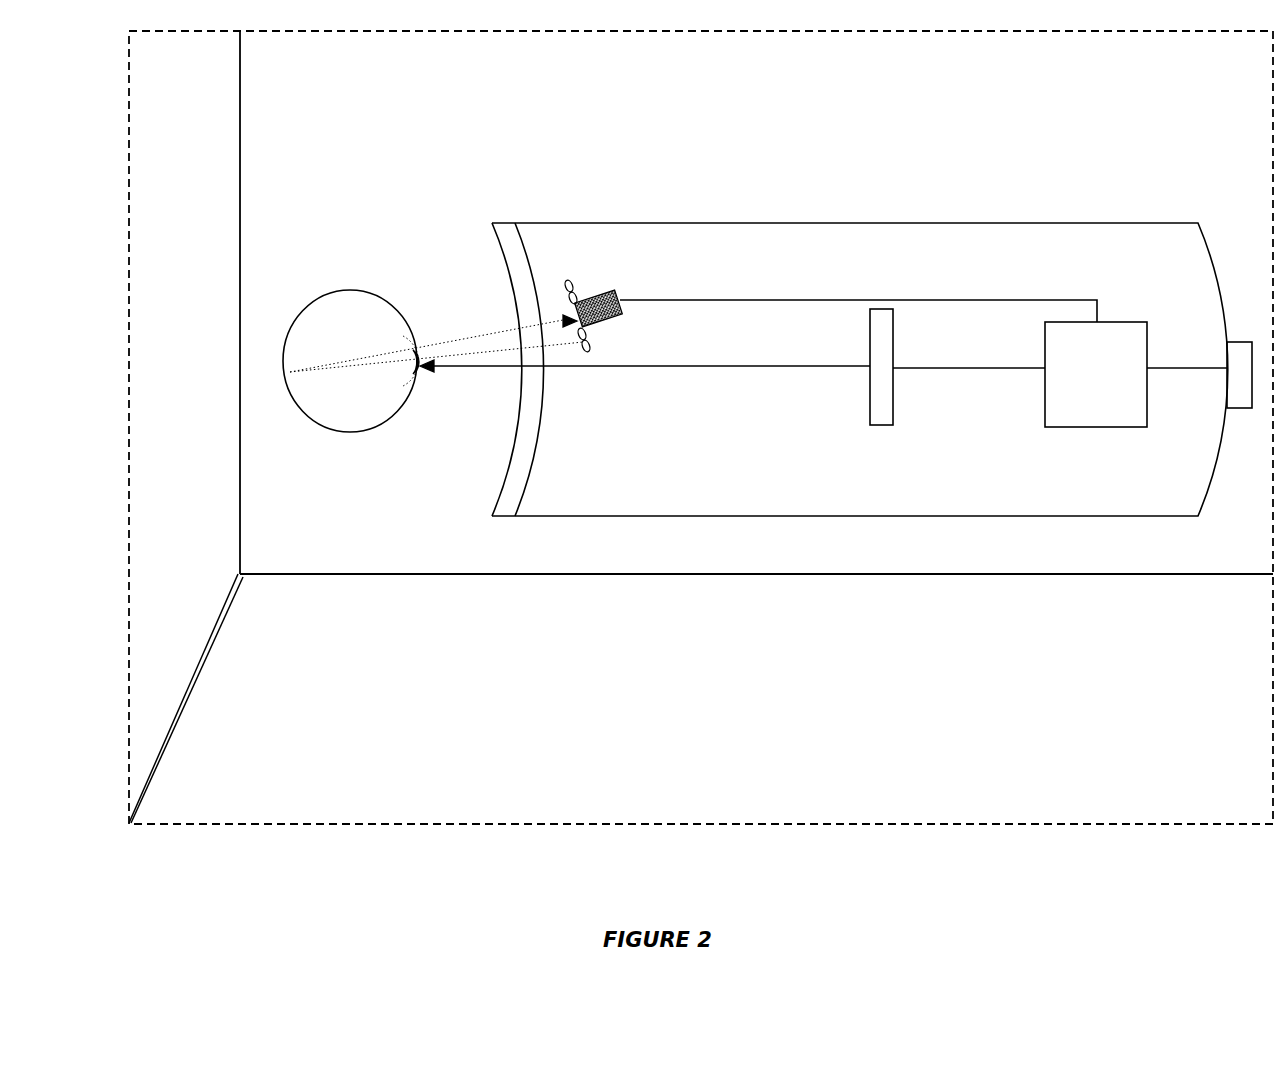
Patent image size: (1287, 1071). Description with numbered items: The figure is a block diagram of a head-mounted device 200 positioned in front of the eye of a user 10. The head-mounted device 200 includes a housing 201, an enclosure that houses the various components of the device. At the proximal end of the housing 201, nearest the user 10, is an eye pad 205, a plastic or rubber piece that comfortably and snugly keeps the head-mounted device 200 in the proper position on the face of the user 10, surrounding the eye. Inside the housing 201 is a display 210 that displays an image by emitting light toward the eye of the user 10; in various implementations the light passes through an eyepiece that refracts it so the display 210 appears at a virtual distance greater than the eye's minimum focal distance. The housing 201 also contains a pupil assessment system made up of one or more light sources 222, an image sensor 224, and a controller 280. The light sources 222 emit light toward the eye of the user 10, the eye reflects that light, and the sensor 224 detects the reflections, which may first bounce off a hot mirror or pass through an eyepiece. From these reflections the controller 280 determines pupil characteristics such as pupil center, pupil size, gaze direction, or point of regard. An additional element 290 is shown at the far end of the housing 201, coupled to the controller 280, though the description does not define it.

The user 10 is at (402, 300).
The head-mounted device 200 is at (641, 172).
The housing 201 is at (1047, 520).
The eye pad 205 is at (206, 297).
The display 210 is at (893, 360).
The light sources 222 is at (563, 283).
The image sensor 224 is at (621, 311).
The controller 280 is at (1113, 379).
The light source 290 is at (1233, 341).